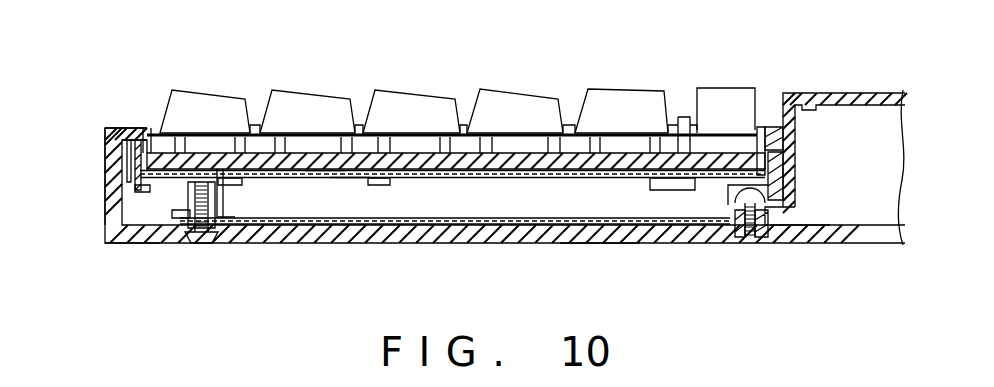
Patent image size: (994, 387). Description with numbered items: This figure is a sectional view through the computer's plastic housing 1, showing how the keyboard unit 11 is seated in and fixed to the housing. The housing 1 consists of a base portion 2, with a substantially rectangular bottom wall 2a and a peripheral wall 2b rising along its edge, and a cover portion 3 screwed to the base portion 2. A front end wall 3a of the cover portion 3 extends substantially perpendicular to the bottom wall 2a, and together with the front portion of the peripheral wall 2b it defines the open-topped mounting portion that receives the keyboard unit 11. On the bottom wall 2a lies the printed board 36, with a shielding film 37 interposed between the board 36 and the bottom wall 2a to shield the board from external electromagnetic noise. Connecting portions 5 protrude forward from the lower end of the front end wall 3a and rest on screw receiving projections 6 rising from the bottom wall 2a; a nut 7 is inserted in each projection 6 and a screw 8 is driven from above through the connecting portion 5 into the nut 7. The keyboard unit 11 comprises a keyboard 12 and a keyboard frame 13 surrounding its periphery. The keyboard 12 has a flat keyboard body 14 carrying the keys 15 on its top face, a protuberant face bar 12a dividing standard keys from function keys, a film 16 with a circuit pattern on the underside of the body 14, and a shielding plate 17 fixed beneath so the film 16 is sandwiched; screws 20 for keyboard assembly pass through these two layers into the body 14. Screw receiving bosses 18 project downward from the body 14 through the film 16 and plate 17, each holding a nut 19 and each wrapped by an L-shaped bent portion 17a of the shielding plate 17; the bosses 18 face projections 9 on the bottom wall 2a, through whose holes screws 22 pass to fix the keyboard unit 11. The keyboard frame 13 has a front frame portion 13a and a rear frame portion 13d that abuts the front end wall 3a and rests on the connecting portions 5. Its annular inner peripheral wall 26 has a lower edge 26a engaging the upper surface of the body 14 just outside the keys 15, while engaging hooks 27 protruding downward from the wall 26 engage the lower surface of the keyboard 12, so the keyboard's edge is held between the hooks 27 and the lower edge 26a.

The housing 1 is at (868, 230).
The base portion 2 is at (428, 242).
The bottom wall 2a is at (597, 243).
The peripheral wall 2b is at (112, 192).
The cover portion 3 is at (860, 93).
The front end wall 3a is at (796, 145).
The connecting portion 5 is at (732, 197).
The screw receiving projection 6 is at (803, 233).
The nut 7 is at (777, 225).
The screw 8 is at (757, 238).
The projection 9 is at (185, 200).
The keyboard unit 11 is at (572, 88).
The keyboard 12 is at (483, 183).
The protuberant face bar 12a is at (685, 116).
The keyboard frame 13 is at (105, 128).
The front frame portion 13a is at (113, 126).
The rear frame portion 13d is at (774, 127).
The keyboard body 14 is at (530, 160).
The keys 15 is at (390, 100).
The film 16 is at (350, 178).
The shielding plate 17 is at (323, 178).
The bent portion 17a is at (232, 165).
The screw receiving boss 18 is at (128, 243).
The nut 19 is at (268, 226).
The screw 20 is at (378, 186).
The screw 22 is at (208, 243).
The inner peripheral wall 26 is at (150, 138).
The lower edge 26a is at (122, 172).
The engaging hook 27 is at (146, 190).
The printed board 36 is at (417, 176).
The shielding film 37 is at (535, 225).